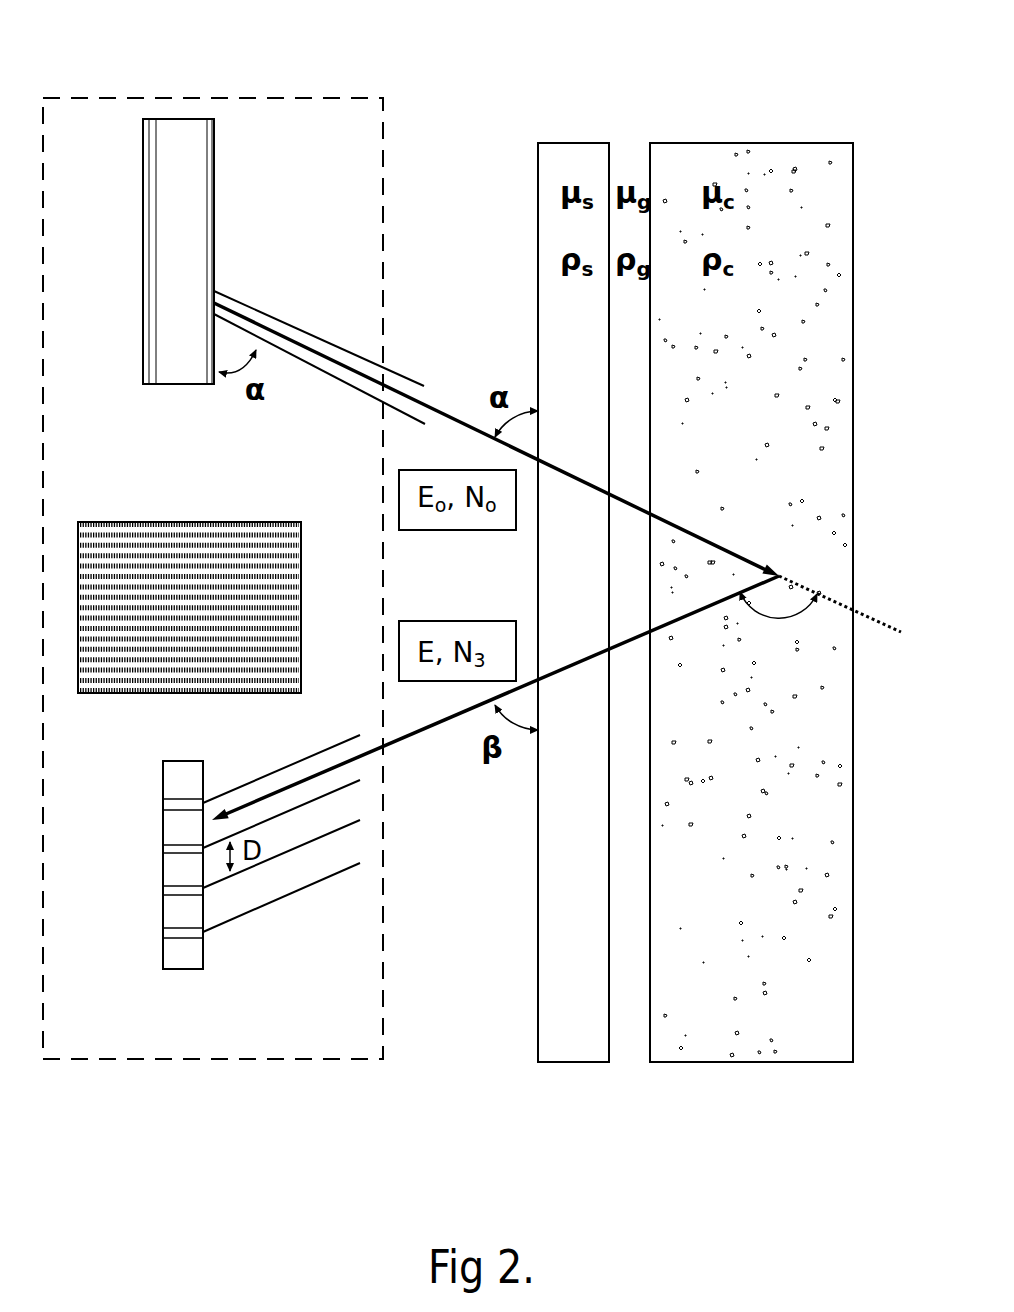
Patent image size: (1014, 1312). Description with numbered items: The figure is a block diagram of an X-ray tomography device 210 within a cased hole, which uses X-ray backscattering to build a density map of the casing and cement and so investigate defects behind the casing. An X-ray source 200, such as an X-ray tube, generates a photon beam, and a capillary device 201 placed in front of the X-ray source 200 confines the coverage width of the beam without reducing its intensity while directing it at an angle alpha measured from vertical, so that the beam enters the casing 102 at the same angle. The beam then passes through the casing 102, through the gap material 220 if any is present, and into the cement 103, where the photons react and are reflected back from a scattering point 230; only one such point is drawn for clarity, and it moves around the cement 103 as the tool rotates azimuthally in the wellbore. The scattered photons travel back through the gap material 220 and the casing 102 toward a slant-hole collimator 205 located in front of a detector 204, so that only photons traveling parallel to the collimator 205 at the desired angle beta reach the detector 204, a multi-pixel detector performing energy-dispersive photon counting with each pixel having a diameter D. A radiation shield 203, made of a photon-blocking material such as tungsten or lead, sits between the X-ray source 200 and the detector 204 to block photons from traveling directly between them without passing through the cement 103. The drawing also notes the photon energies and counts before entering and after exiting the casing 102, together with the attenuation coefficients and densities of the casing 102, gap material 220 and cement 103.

The X-ray tomography device 210 is at (135, 80).
The X-ray source 200 is at (180, 119).
The capillary device 201 is at (285, 323).
The radiation shield 203 is at (185, 522).
The detector 204 is at (163, 873).
The slant-hole collimator 205 is at (267, 908).
The casing 102 is at (568, 1062).
The cement 103 is at (750, 143).
The gap material 220 is at (628, 1052).
The scattering point 230 is at (785, 570).